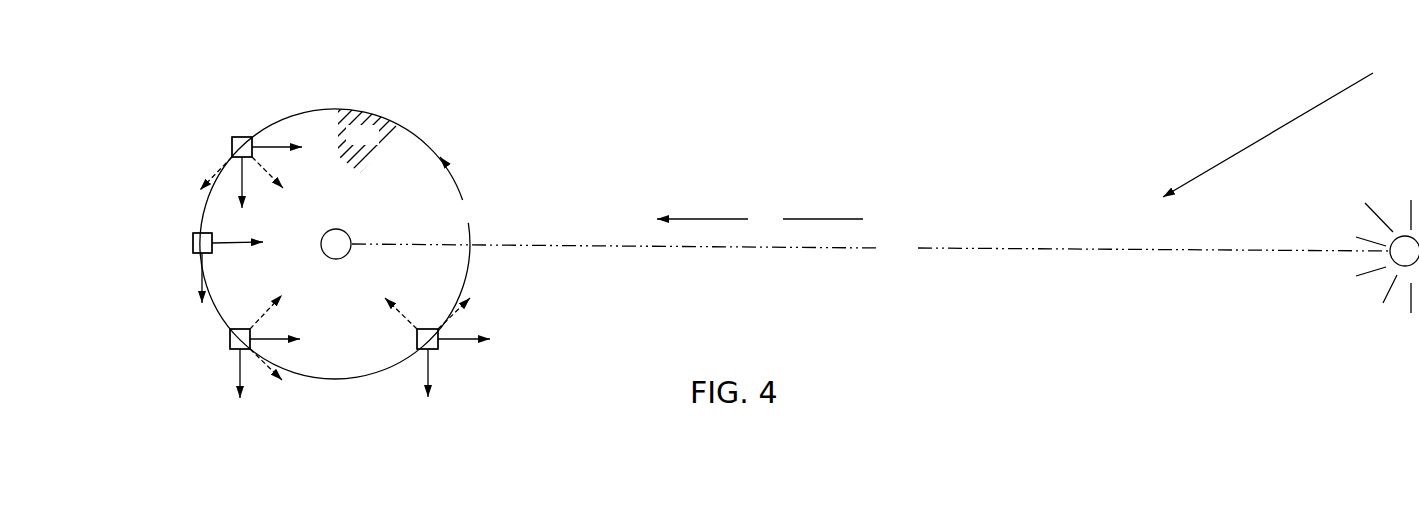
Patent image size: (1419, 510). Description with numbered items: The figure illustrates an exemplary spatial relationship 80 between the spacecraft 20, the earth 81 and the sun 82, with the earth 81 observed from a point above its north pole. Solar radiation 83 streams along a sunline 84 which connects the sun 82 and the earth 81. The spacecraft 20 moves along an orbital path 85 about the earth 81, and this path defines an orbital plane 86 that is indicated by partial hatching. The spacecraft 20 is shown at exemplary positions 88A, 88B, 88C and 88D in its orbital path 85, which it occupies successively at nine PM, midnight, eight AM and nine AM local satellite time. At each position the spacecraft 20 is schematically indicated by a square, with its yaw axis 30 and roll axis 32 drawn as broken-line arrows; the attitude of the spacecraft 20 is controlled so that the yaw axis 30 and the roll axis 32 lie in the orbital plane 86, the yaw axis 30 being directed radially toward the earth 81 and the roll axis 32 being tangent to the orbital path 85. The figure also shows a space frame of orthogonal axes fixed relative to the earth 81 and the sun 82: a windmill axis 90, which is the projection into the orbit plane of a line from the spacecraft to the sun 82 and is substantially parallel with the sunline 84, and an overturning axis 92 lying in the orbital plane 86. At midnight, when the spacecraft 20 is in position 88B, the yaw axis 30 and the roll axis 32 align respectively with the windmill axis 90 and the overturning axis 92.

The spacecraft 20 is at (242, 137).
The yaw axis 30 is at (264, 164).
The roll axis 32 is at (217, 167).
The spatial relationship 80 is at (1285, 127).
The earth 81 is at (348, 230).
The sun 82 is at (1397, 233).
The solar radiation 83 is at (760, 219).
The sunline 84 is at (871, 249).
The orbital path 85 is at (340, 244).
The orbital plane 86 is at (367, 167).
The position 88A is at (228, 133).
The position 88B is at (188, 230).
The position 88C is at (222, 351).
The position 88D is at (415, 405).
The windmill axis 90 is at (279, 143).
The overturning axis 92 is at (247, 186).